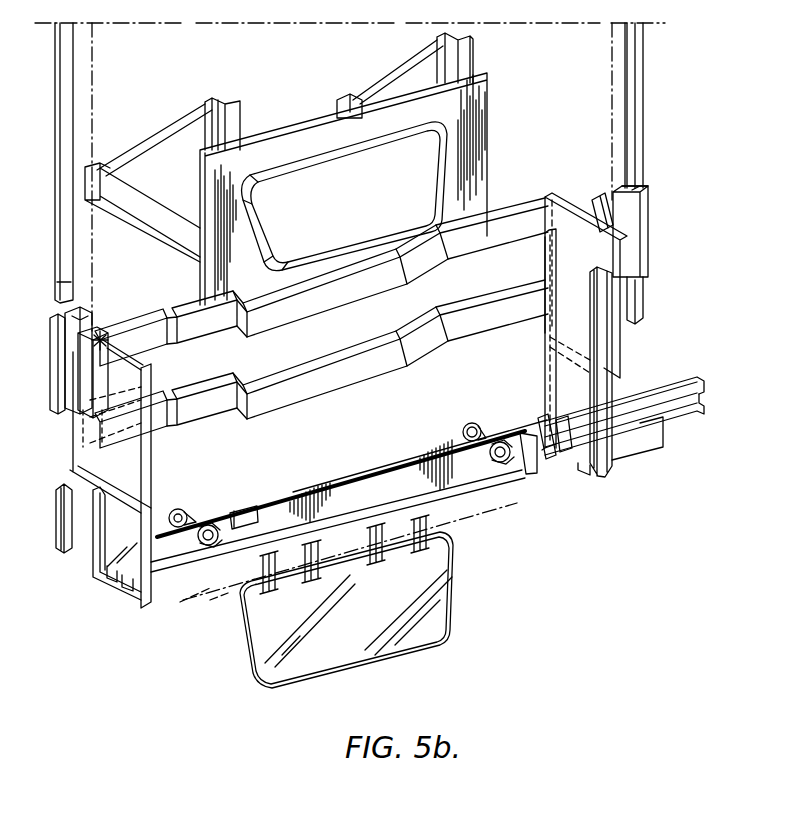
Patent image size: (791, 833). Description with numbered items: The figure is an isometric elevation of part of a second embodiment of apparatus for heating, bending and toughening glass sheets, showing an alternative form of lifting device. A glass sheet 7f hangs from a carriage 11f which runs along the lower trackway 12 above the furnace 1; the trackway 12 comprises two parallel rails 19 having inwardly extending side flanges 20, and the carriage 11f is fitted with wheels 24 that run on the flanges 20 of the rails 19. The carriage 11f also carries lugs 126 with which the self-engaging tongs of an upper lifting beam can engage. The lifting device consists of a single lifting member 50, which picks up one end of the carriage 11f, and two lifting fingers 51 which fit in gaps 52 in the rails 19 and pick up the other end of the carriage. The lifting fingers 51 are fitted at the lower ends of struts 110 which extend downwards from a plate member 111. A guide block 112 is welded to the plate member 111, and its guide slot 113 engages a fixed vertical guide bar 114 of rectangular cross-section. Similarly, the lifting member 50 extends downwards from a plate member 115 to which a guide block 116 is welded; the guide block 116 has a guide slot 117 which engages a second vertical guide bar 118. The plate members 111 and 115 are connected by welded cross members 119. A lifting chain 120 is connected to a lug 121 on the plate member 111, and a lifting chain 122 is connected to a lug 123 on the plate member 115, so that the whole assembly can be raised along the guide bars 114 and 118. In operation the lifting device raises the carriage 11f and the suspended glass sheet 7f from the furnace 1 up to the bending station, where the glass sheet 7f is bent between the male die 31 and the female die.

The furnace chamber 1 is at (228, 610).
The glass sheet 7f is at (437, 603).
The carriage 11f is at (340, 492).
The lower trackway 12 is at (651, 452).
The rails 19 is at (627, 450).
The inwardly extending side flanges 20 is at (693, 408).
The wheels 24 is at (530, 493).
The male die 31 is at (281, 280).
The lifting member 50 is at (147, 598).
The lifting fingers 51 is at (585, 477).
The gaps 52 is at (542, 420).
The struts 110 is at (605, 342).
The plate member 111 is at (597, 245).
The guide block 112 is at (637, 222).
The guide slot 113 is at (632, 200).
The vertical guide bar 114 is at (632, 63).
The plate member 115 is at (127, 482).
The guide block 116 is at (107, 341).
The guide slot 117 is at (52, 388).
The second vertical guide bar 118 is at (65, 273).
The cross members 119 is at (341, 366).
The lifting chain 120 is at (612, 108).
The lug 121 is at (598, 195).
The lifting chain 122 is at (93, 294).
The lug 123 is at (100, 397).
The lugs 126 is at (452, 443).